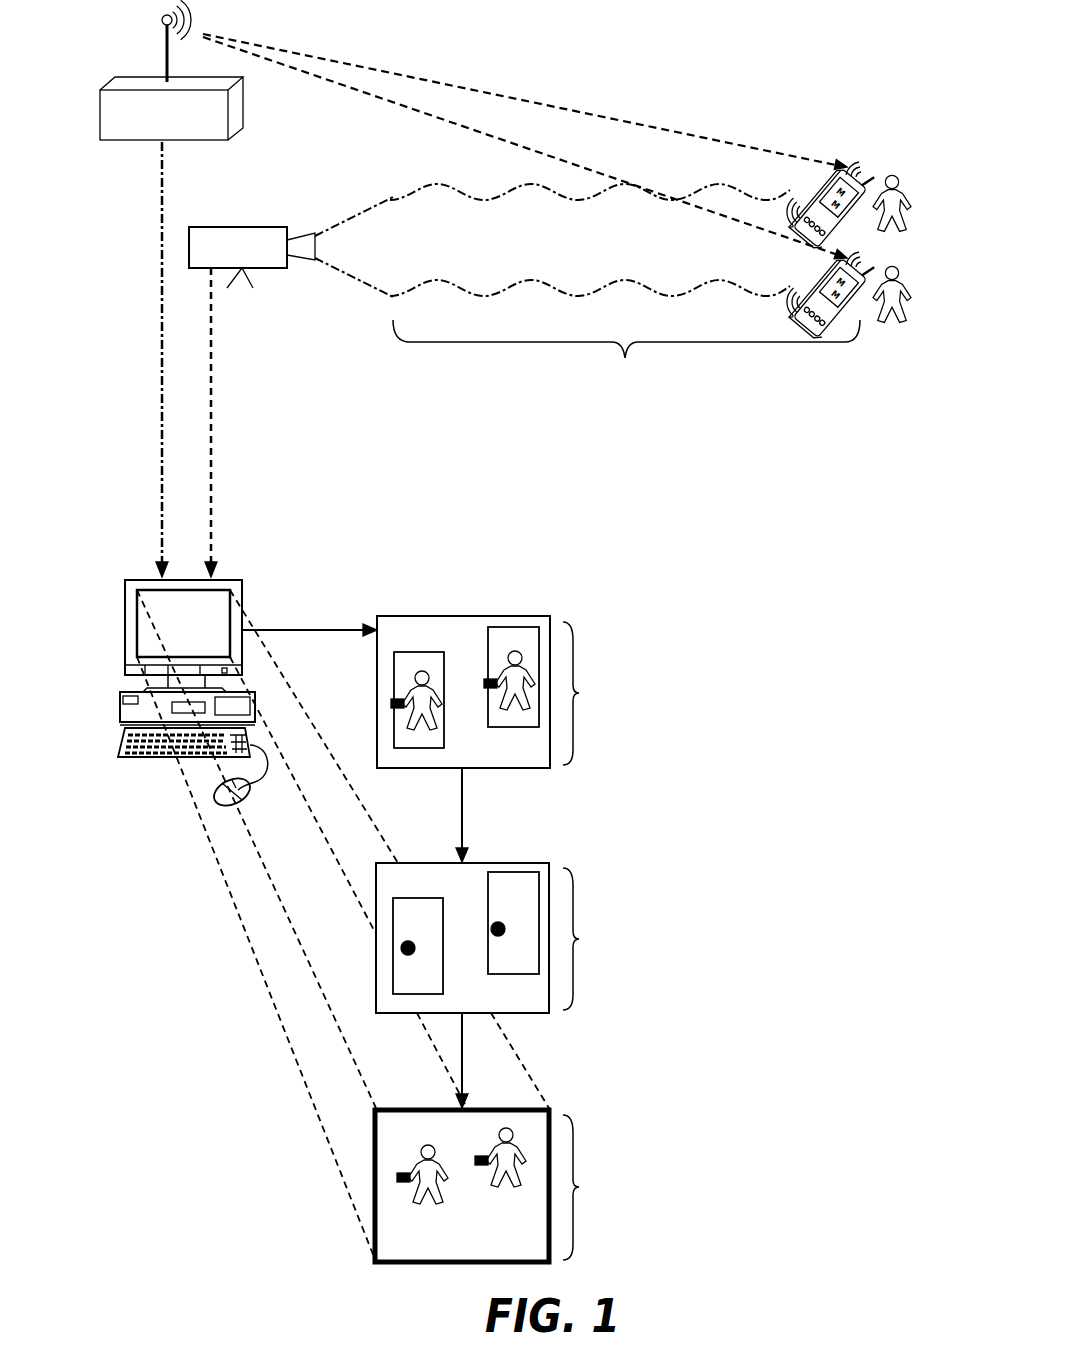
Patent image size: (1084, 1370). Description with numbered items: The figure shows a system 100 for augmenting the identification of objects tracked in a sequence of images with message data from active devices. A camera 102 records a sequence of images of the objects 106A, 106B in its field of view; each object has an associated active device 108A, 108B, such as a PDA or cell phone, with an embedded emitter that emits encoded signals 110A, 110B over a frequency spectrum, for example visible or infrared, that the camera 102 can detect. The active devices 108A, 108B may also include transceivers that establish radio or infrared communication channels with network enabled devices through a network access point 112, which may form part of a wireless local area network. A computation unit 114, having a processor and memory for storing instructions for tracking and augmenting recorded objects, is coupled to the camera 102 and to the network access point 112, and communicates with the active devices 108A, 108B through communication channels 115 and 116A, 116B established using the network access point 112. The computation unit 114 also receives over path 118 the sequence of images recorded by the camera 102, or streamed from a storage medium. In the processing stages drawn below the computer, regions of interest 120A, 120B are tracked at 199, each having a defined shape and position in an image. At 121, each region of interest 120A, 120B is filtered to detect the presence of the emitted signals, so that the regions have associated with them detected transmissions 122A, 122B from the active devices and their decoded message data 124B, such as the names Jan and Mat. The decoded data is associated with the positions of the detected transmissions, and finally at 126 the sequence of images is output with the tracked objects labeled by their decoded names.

The system 100 is at (795, 521).
The camera 102 is at (237, 227).
The object 106A is at (885, 192).
The object 106B is at (892, 322).
The active device 108A is at (805, 196).
The active device 108B is at (800, 320).
The signal 110A is at (443, 188).
The signal 110B is at (443, 284).
The network access point 112 is at (131, 142).
The computation unit 114 is at (129, 562).
The communication channel 115 is at (160, 410).
The communication channel 116A is at (443, 83).
The communication channel 116B is at (425, 116).
The path 118 is at (215, 410).
The region of interest 120A is at (424, 650).
The region of interest 120B is at (513, 627).
The signal detection and decoding stage 121 is at (461, 942).
The detected transmission 122A is at (403, 946).
The detected transmission 122B is at (502, 926).
The decoded message data 124B is at (407, 982).
The output sequence of images 126 is at (530, 1108).
The region of interest tracking stage 199 is at (465, 761).